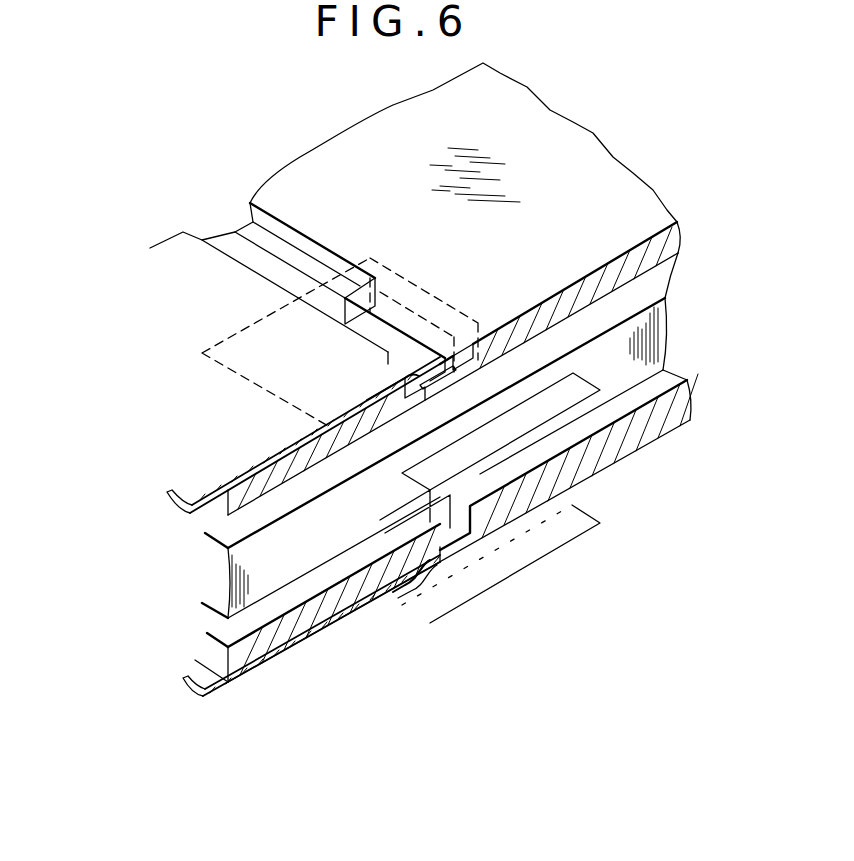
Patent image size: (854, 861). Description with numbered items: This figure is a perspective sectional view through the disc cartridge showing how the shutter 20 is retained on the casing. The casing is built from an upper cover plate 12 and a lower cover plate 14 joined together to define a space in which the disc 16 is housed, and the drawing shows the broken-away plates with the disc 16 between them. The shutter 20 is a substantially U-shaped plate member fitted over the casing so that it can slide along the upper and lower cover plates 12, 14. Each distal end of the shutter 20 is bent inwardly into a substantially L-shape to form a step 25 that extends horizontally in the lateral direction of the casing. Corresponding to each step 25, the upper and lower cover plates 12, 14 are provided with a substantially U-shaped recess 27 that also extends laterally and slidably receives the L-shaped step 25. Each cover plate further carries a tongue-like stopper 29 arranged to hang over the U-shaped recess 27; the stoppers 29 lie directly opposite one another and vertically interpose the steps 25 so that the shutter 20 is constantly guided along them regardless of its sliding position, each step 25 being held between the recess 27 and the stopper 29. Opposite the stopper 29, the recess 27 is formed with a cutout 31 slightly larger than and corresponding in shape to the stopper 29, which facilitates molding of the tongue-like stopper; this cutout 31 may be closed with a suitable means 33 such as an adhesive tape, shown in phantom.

The upper cover plate 12 is at (595, 272).
The lower cover plate 14 is at (667, 425).
The disc 16 is at (670, 300).
The shutter 20 is at (212, 490).
The step 25 is at (432, 365).
The U-shaped recess 27 is at (310, 258).
The tongue-like stopper 29 is at (393, 300).
The cutout 31 is at (458, 387).
The closing means 33 is at (470, 330).